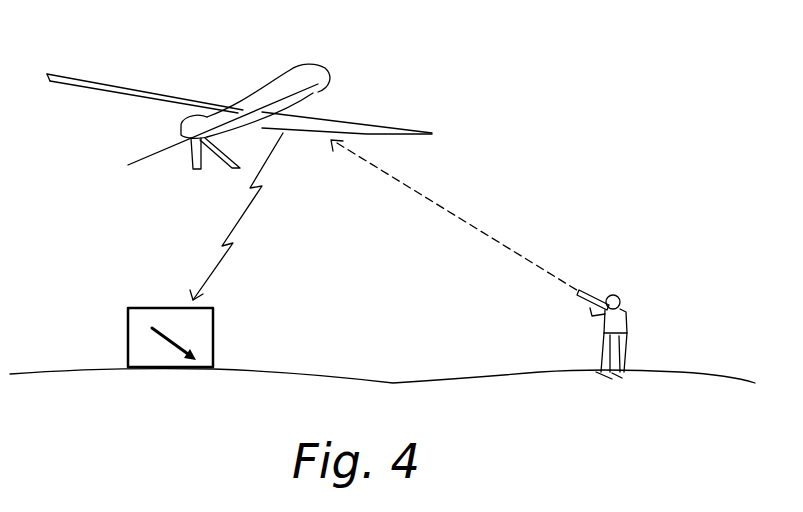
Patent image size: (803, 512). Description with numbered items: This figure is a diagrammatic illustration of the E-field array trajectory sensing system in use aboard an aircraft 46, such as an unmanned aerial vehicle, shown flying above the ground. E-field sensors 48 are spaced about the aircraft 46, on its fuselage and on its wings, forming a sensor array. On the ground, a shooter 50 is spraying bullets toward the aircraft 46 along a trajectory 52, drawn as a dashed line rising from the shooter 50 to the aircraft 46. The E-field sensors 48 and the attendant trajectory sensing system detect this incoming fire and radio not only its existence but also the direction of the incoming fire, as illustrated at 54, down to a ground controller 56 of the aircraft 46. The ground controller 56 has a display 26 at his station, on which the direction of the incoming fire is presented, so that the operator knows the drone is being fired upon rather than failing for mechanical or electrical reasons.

The aircraft 46 is at (322, 52).
The E-field sensors 48 is at (92, 86).
The transmission of direction of incoming fire 54 is at (252, 200).
The trajectory 52 is at (493, 237).
The ground controller 56 is at (135, 307).
The display 26 is at (180, 344).
The shooter 50 is at (597, 292).